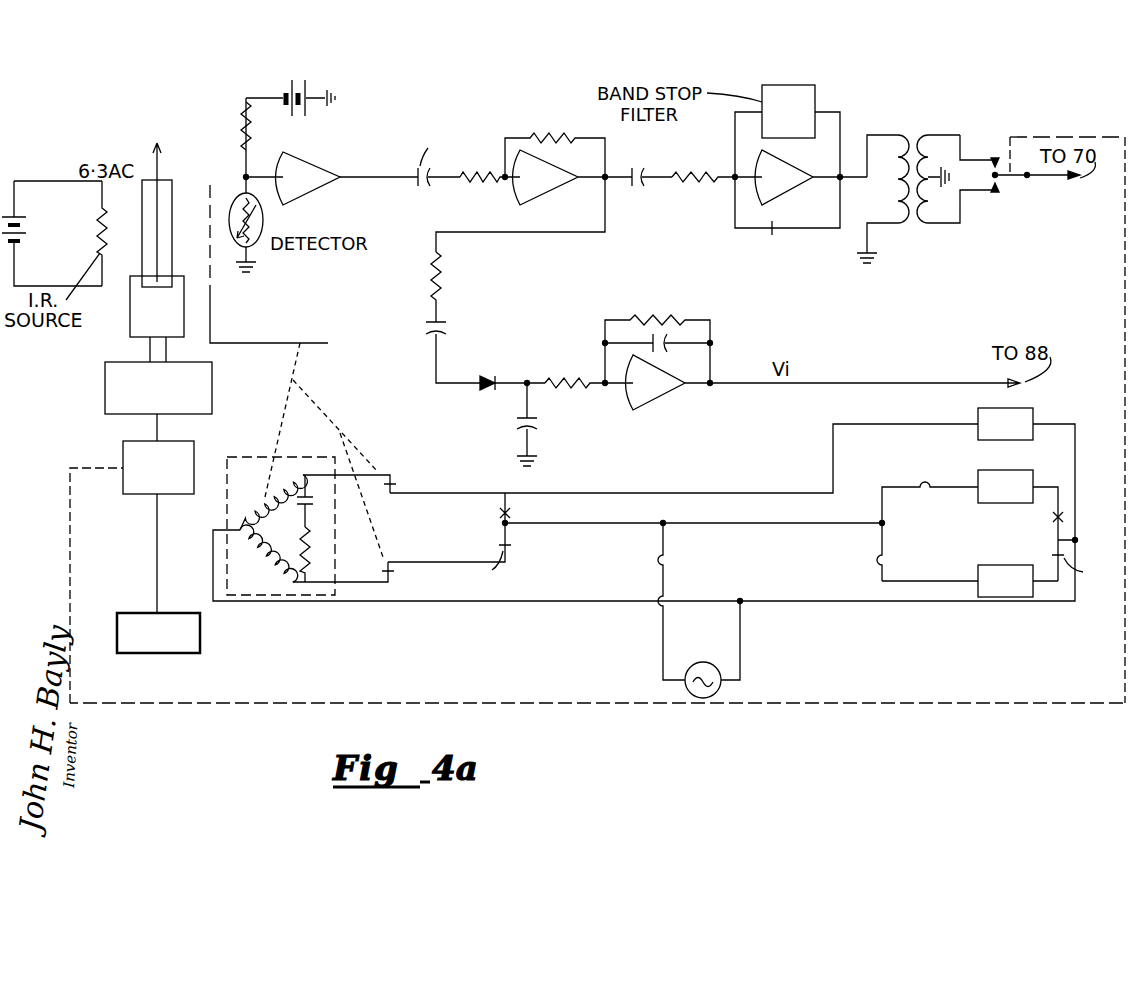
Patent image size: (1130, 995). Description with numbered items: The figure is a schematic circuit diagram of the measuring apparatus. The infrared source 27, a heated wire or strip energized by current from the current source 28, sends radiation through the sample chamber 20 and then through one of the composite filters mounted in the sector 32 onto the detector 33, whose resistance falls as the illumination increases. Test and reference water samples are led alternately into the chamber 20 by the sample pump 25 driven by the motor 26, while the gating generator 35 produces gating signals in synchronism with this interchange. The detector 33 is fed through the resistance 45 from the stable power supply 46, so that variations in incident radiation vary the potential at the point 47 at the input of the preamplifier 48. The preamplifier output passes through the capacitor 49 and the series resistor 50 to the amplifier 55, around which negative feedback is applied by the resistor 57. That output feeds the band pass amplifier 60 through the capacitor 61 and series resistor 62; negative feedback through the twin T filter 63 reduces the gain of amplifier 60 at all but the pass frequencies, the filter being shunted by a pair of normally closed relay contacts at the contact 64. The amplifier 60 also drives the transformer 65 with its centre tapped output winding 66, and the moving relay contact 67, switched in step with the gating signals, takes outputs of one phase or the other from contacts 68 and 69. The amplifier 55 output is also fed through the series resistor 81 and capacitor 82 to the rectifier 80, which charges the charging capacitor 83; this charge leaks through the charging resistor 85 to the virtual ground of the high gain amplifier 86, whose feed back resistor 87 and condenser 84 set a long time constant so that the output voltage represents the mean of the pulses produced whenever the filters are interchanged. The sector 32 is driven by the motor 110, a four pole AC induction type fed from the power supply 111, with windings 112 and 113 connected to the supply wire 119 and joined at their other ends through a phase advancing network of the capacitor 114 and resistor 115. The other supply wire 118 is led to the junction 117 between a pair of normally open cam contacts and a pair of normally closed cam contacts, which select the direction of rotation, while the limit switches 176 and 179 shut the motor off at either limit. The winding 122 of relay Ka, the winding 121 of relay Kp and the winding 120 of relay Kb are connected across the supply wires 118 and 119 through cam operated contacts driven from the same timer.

The sample chamber 20 is at (172, 205).
The sample pump 25 is at (214, 391).
The motor 26 is at (203, 637).
The infrared source 27 is at (100, 243).
The current source 28 is at (36, 205).
The sector 32 is at (213, 308).
The detector 33 is at (236, 200).
The gating generator 35 is at (196, 457).
The resistance 45 is at (240, 144).
The stable power supply 46 is at (305, 116).
The potential point 47 is at (278, 177).
The preamplifier 48 is at (318, 190).
The capacitor 49 is at (416, 186).
The series resistor 50 is at (480, 186).
The amplifier 55 is at (581, 186).
The resistor 57 is at (563, 141).
The band pass amplifier 60 is at (788, 166).
The capacitor 61 is at (637, 186).
The series resistor 62 is at (717, 186).
The twin T filter 63 is at (808, 85).
The relay contact Kp1 64 is at (768, 234).
The transformer 65 is at (960, 171).
The centre tapped output winding 66 is at (946, 135).
The moving relay contact 67 is at (1018, 180).
The contact 68 is at (994, 157).
The contact 69 is at (992, 192).
The rectifier 80 is at (498, 381).
The series resistor 81 is at (432, 273).
The capacitor 82 is at (428, 331).
The charging capacitor 83 is at (517, 424).
The condenser 84 is at (670, 340).
The charging resistor 85 is at (571, 386).
The high gain amplifier 86 is at (631, 408).
The feed back resistor 87 is at (632, 316).
The motor 110 is at (353, 428).
The power supply 111 is at (705, 661).
The winding 112 is at (258, 492).
The winding 113 is at (257, 557).
The capacitor 114 is at (301, 502).
The resistor 115 is at (300, 553).
The junction 117 is at (508, 526).
The power supply wire 118 is at (667, 542).
The power supply wire 119 is at (740, 646).
The winding of relay Kb 120 is at (980, 408).
The winding of relay Kp 121 is at (975, 470).
The winding of relay Ka 122 is at (976, 565).
The limit switch 176 is at (393, 480).
The limit switch 179 is at (391, 572).